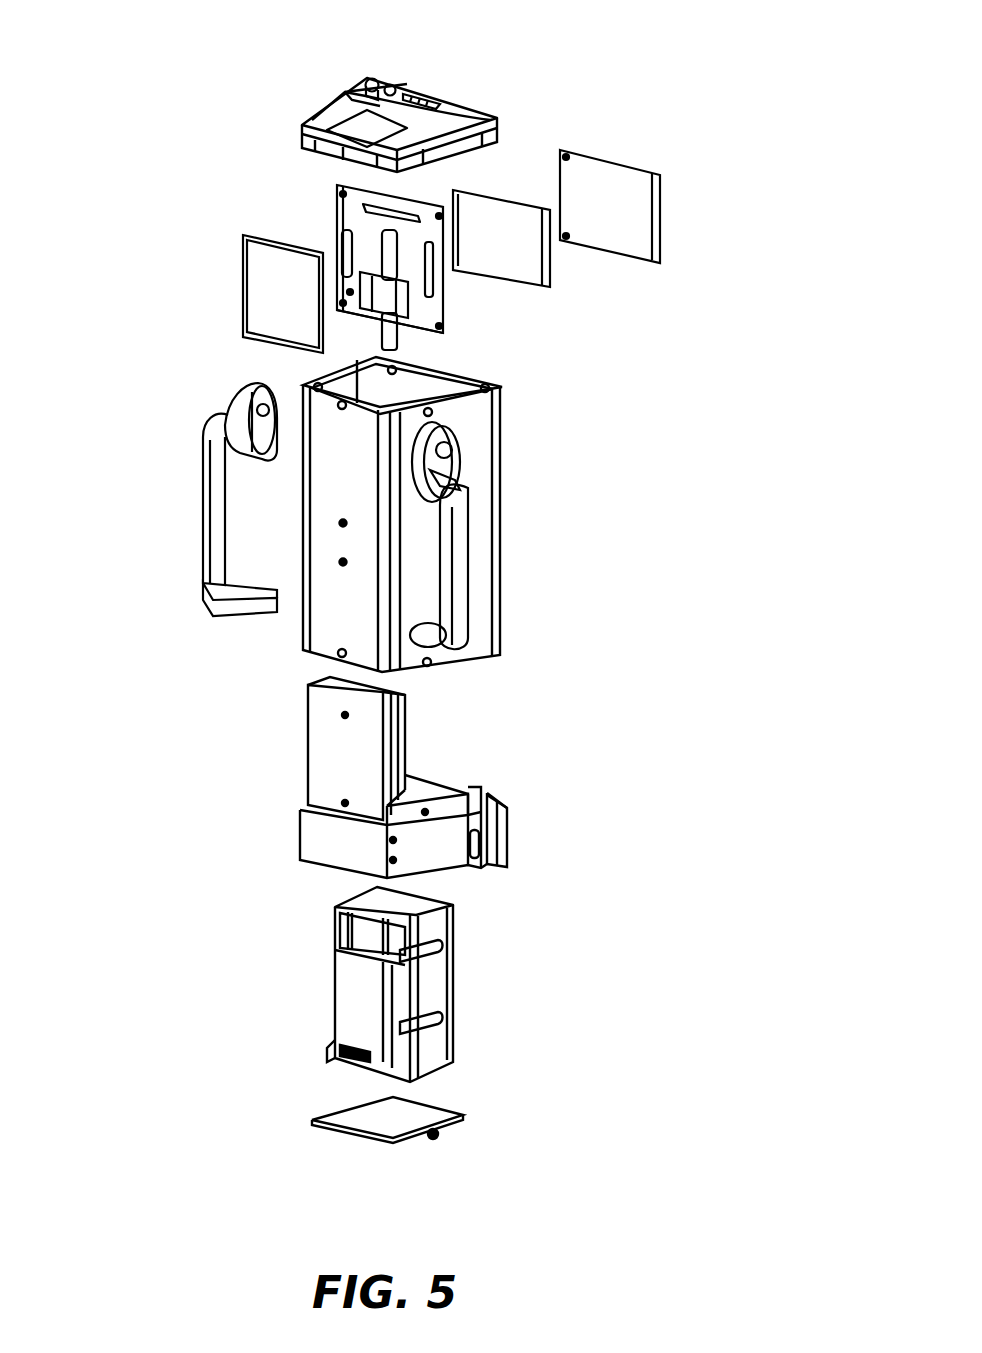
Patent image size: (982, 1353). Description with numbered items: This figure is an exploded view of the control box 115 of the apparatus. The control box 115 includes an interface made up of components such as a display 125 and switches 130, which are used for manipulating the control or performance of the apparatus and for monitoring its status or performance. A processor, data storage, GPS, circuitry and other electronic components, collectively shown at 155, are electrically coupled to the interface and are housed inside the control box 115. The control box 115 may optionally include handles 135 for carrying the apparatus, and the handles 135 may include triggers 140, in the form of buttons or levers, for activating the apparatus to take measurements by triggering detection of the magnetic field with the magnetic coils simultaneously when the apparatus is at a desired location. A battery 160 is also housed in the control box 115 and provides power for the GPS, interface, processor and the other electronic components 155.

The control box 115 is at (672, 109).
The display 125 is at (358, 127).
The switches 130 is at (383, 74).
The handles 135 is at (452, 555).
The triggers 140 is at (448, 436).
The electronic components 155 is at (340, 205).
The battery 160 is at (455, 980).